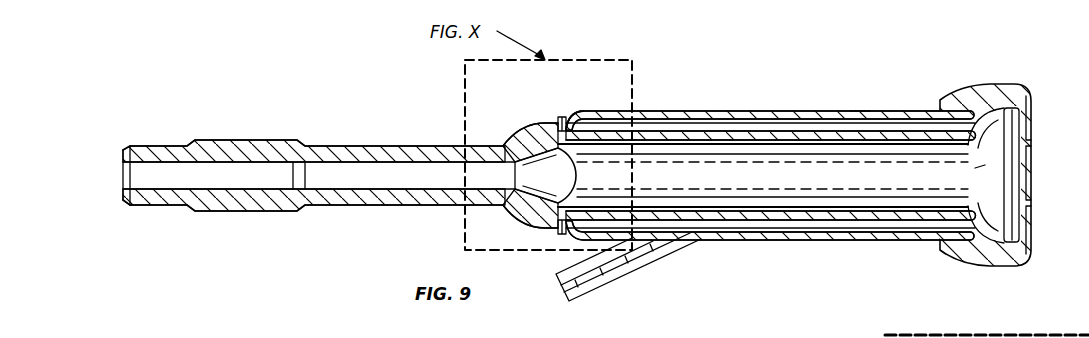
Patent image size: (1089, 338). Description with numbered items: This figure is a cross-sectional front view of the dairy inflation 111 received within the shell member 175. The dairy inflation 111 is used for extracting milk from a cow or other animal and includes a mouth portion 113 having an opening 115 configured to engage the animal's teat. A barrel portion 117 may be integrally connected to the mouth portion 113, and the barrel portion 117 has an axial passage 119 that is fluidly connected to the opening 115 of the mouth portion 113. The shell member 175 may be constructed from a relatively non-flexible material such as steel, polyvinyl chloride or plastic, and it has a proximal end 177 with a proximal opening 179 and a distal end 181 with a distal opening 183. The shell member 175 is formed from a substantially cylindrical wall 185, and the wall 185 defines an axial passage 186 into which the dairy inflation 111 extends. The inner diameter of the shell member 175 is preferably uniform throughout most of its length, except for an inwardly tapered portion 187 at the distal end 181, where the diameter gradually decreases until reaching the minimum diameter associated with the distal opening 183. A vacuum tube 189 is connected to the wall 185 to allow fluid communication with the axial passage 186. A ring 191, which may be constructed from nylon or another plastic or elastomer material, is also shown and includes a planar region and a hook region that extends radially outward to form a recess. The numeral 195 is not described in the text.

The dairy inflation 111 is at (379, 116).
The mouth portion 113 is at (1021, 90).
The opening 115 is at (1032, 172).
The barrel portion 117 is at (750, 216).
The axial passage 119 is at (745, 148).
The shell member 175 is at (904, 111).
The proximal end 177 is at (928, 240).
The proximal opening 179 is at (971, 146).
The distal end 181 is at (629, 110).
The distal opening 183 is at (540, 130).
The cylindrical wall 185 is at (852, 238).
The axial passage 186 is at (860, 115).
The inwardly tapered portion 187 is at (586, 116).
The vacuum tube 189 is at (618, 268).
The ring 191 is at (562, 116).
The sleeve 195 is at (812, 218).